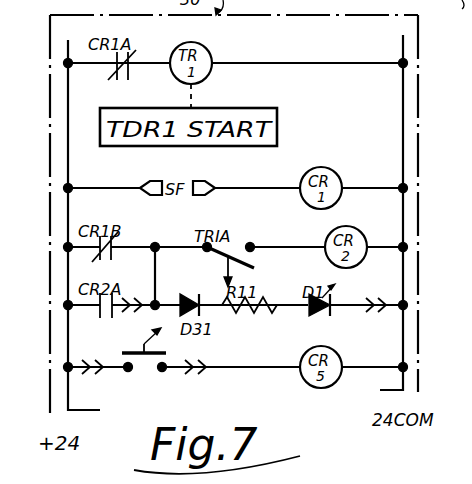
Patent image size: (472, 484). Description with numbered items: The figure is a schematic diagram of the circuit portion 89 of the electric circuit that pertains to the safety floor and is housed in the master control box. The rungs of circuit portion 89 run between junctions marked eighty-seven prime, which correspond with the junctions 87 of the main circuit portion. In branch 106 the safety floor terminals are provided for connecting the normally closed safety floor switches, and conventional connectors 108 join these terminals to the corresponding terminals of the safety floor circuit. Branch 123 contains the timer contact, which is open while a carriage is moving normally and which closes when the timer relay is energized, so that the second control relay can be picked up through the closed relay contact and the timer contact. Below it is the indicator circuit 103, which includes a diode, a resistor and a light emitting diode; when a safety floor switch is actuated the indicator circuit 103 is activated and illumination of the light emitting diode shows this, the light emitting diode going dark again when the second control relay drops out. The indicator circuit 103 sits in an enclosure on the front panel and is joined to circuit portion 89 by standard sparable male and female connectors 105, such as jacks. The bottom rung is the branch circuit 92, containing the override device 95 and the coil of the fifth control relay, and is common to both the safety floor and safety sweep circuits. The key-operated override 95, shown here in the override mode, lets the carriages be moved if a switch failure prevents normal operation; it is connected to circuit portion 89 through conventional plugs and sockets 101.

The conventional connectors 108 is at (151, 183).
The branch 106 is at (273, 196).
The branch 123 is at (310, 230).
The sparable male and female connectors 105 is at (141, 304).
The indicator circuit 103 is at (221, 308).
The override device 95 is at (144, 344).
The plugs and sockets 101 is at (118, 375).
The circuit portion 89 is at (275, 371).
The branch circuit 92 is at (280, 366).
The junctions 87 is at (240, 402).